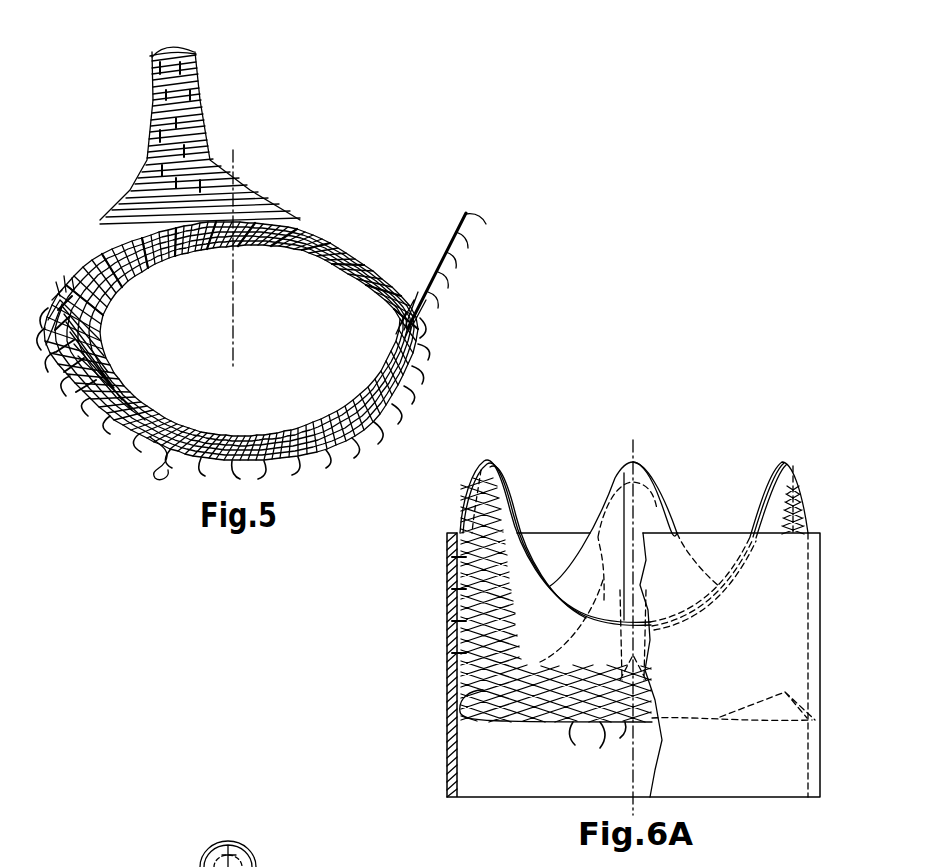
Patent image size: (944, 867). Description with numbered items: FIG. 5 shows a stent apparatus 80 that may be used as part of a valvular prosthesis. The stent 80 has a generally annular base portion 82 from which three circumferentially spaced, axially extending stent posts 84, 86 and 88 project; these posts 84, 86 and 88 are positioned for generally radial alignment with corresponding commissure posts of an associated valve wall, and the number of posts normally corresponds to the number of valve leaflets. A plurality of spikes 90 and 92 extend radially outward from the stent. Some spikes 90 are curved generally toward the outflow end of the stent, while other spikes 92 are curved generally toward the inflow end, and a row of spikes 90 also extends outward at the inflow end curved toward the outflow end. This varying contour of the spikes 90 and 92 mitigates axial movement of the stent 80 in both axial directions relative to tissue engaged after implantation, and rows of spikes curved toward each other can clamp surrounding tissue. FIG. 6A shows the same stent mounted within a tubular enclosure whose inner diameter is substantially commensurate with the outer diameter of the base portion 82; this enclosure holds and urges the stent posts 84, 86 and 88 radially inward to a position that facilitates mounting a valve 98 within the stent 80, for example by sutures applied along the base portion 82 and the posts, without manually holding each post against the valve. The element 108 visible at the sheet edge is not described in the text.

In FIG. 5, the stent apparatus 80 is at (506, 180).
In FIG. 5, the annular base portion 82 is at (345, 440).
In FIG. 6A, the annular base portion 82 is at (577, 717).
In FIG. 5, the stent post 84 is at (68, 292).
In FIG. 6A, the stent post 84 is at (462, 574).
In FIG. 5, the stent post 86 is at (203, 113).
In FIG. 6A, the stent post 86 is at (622, 480).
In FIG. 5, the stent post 88 is at (440, 250).
In FIG. 6A, the stent post 88 is at (797, 510).
In FIG. 5, the spikes 90 is at (135, 438).
In FIG. 6A, the spikes 90 is at (612, 730).
In FIG. 5, the spikes 92 is at (455, 268).
In FIG. 6A, the spikes 92 is at (470, 524).
In FIG. 6A, the valve 98 is at (684, 480).
In FIG. 5, the dome 108 is at (228, 840).